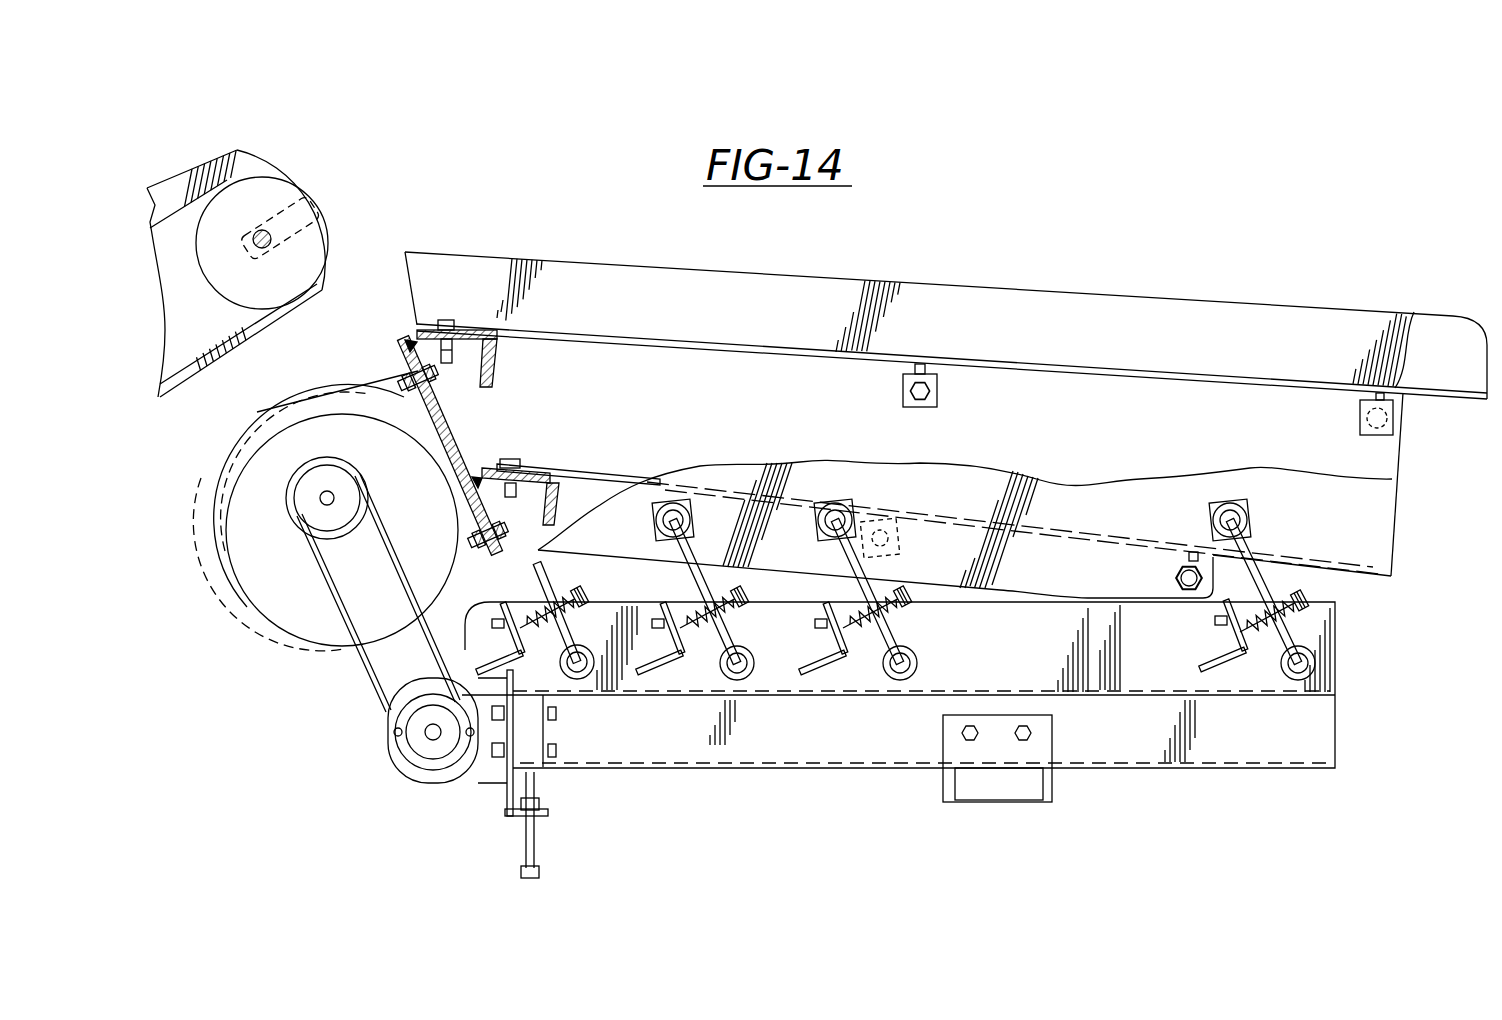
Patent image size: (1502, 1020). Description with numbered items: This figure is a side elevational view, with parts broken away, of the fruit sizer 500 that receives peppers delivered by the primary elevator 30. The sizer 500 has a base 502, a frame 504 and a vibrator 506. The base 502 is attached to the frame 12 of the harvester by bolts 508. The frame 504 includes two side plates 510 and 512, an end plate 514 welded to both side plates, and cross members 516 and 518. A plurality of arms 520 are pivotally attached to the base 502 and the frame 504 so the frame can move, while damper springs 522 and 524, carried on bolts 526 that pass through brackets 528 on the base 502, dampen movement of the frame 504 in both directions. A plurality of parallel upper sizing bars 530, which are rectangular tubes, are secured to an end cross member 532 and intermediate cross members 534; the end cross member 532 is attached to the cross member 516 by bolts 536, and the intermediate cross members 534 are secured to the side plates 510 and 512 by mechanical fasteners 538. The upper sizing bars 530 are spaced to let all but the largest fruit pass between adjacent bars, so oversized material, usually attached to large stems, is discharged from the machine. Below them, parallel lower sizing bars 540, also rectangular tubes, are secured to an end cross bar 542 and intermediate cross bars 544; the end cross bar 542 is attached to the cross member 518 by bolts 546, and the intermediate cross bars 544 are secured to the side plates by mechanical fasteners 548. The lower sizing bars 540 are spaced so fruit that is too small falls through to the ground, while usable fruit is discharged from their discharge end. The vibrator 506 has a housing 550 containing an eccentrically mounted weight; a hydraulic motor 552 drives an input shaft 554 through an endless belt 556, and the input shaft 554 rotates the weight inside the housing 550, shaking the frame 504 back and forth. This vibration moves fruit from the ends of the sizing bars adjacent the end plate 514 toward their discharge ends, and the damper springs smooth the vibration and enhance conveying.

The frame 12 is at (943, 785).
The primary elevator 30 is at (272, 158).
The sizer 500 is at (1056, 250).
The base 502 is at (1335, 690).
The frame 504 is at (1385, 538).
The vibrator 506 is at (303, 627).
The bolts 508 is at (973, 740).
The side plate 510 is at (1380, 462).
The side plate 512 is at (1375, 578).
The end plate 514 is at (405, 345).
The cross member 516 is at (400, 375).
The cross member 518 is at (525, 522).
The arms 520 is at (732, 672).
The damper spring 522 is at (683, 612).
The damper spring 524 is at (760, 600).
The bolts 526 is at (1322, 600).
The brackets 528 is at (1200, 675).
The upper sizing bars 530 is at (647, 345).
The end cross member 532 is at (408, 343).
The intermediate cross members 534 is at (1412, 318).
The bolts 536 is at (450, 327).
The mechanical fasteners 538 is at (913, 375).
The lower sizing bars 540 is at (608, 470).
The end cross bar 542 is at (483, 465).
The intermediate cross bars 544 is at (893, 520).
The bolts 546 is at (517, 462).
The mechanical fasteners 548 is at (1180, 597).
The housing 550 is at (273, 617).
The hydraulic motor 552 is at (462, 755).
The input shaft 554 is at (327, 498).
The endless belt 556 is at (388, 705).